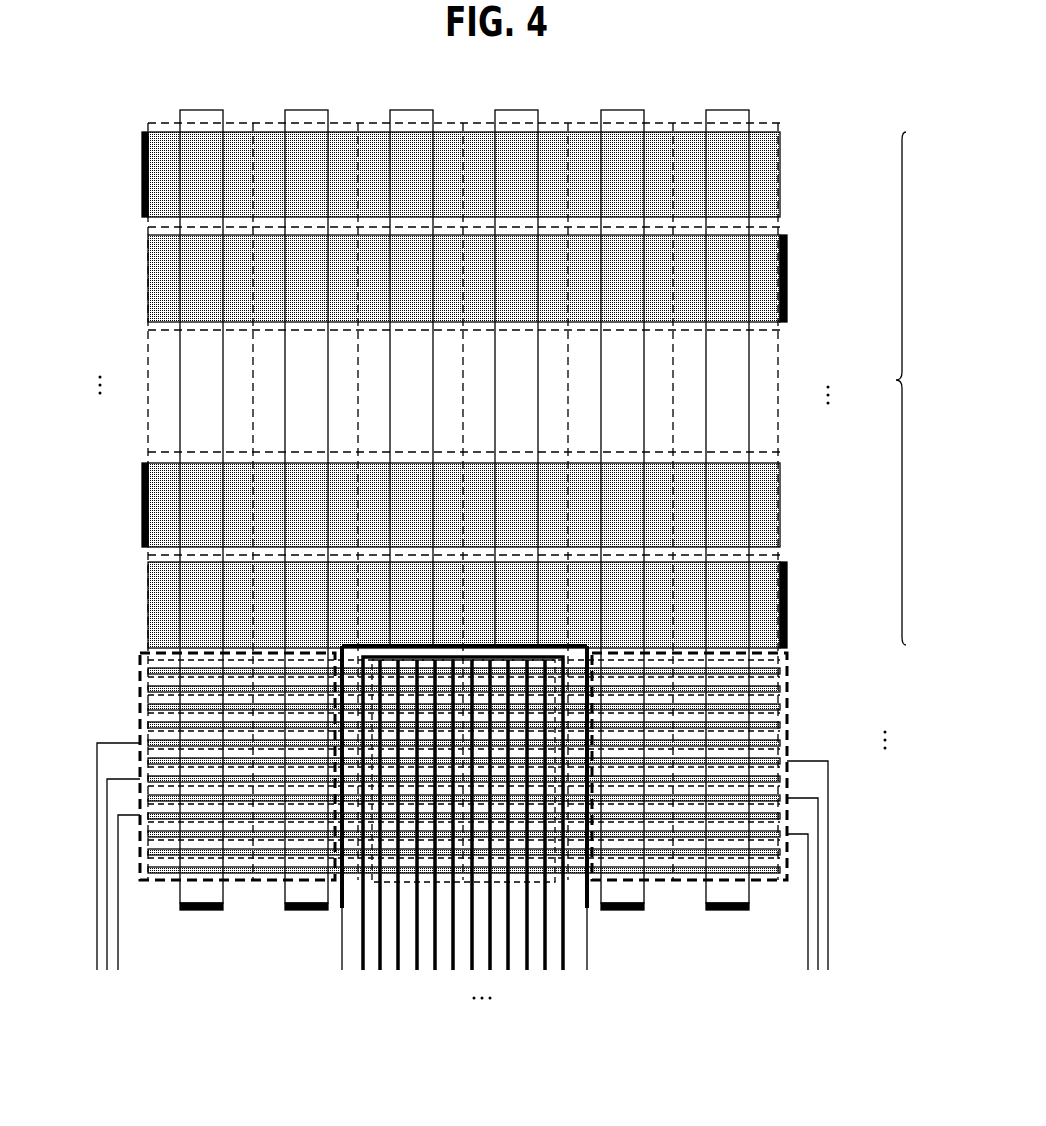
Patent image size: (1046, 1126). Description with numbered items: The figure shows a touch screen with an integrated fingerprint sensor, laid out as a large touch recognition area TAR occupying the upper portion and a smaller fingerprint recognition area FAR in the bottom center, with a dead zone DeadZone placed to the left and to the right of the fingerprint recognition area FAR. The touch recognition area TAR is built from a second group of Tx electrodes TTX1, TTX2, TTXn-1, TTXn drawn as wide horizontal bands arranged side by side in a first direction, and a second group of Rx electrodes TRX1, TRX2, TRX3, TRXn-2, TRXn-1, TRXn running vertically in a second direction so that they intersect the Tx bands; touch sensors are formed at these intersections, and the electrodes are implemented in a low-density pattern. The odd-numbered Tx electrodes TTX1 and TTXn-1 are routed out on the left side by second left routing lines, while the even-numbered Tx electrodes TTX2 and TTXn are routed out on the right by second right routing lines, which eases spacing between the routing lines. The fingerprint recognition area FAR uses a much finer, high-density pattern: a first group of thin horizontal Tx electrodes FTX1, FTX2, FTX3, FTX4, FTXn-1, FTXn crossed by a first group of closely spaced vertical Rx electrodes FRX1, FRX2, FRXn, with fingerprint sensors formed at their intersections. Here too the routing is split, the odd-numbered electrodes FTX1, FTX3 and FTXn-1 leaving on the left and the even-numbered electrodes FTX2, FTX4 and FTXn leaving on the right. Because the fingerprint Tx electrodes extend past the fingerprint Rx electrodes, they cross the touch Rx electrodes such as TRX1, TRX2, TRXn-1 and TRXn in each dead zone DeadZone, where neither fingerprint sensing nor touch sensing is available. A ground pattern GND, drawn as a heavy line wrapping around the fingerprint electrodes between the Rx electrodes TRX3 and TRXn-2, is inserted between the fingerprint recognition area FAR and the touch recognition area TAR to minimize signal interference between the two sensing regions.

The first touch Tx electrode TTX1 is at (53, 970).
The second touch Tx electrode TTX2 is at (873, 970).
The (n-1)th touch Tx electrode TTXn-1 is at (63, 970).
The nth touch Tx electrode TTXn is at (862, 970).
The touch recognition area TAR is at (924, 388).
The first touch Rx electrode TRX1 is at (201, 910).
The second touch Rx electrode TRX2 is at (306, 910).
The third touch Rx electrode TRX3 is at (340, 835).
The (n-2)th touch Rx electrode TRXn-2 is at (584, 844).
The (n-1)th touch Rx electrode TRXn-1 is at (622, 910).
The nth touch Rx electrode TRXn is at (727, 910).
The first fingerprint Tx electrode FTX1 is at (75, 970).
The second fingerprint Tx electrode FTX2 is at (850, 970).
The third fingerprint Tx electrode FTX3 is at (85, 970).
The fourth fingerprint Tx electrode FTX4 is at (839, 970).
The (n-1)th fingerprint Tx electrode FTXn-1 is at (128, 970).
The nth fingerprint Tx electrode FTXn is at (797, 970).
The first fingerprint Rx electrode FRX1 is at (378, 841).
The second fingerprint Rx electrode FRX2 is at (397, 841).
The nth fingerprint Rx electrode FRXn is at (543, 841).
The ground pattern GND is at (462, 650).
The fingerprint recognition area FAR is at (468, 882).
The dead zone DeadZone is at (262, 882).